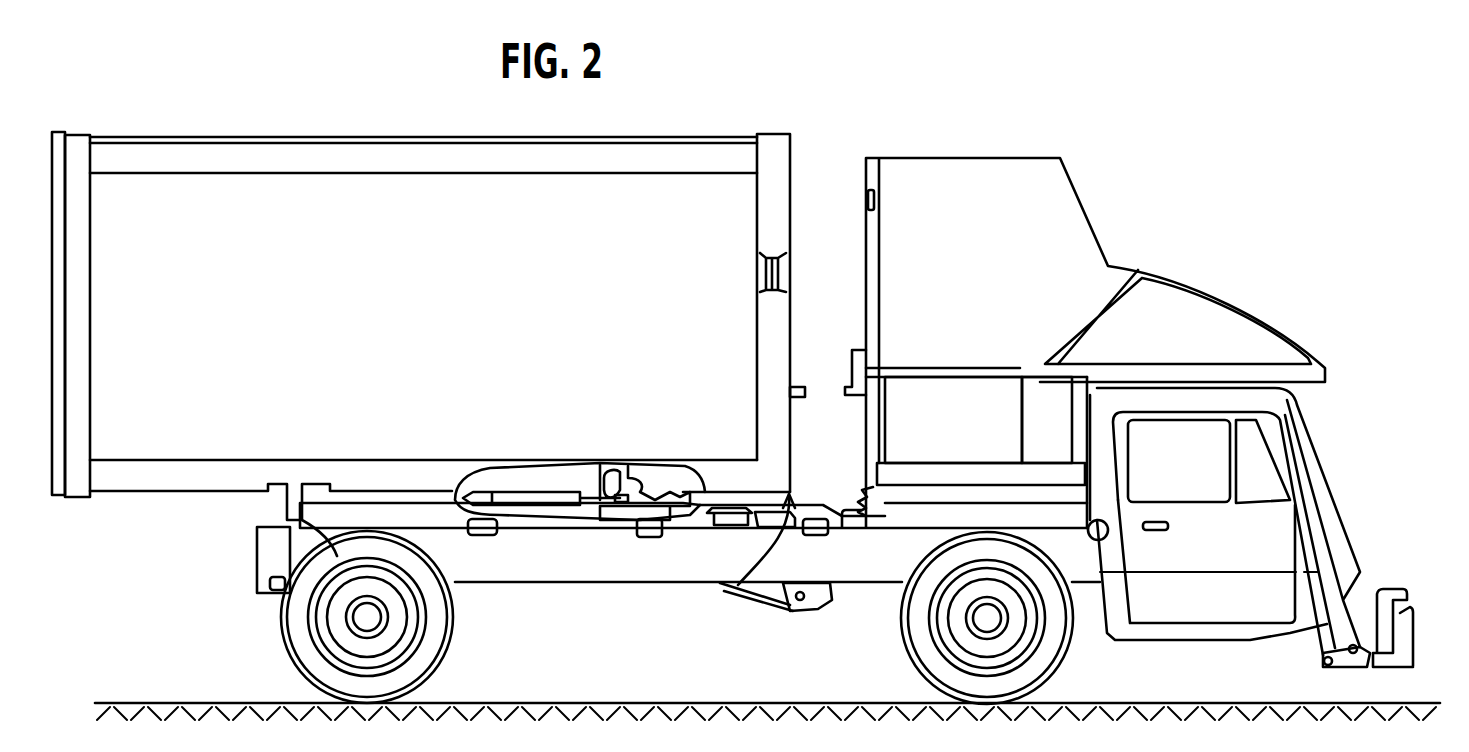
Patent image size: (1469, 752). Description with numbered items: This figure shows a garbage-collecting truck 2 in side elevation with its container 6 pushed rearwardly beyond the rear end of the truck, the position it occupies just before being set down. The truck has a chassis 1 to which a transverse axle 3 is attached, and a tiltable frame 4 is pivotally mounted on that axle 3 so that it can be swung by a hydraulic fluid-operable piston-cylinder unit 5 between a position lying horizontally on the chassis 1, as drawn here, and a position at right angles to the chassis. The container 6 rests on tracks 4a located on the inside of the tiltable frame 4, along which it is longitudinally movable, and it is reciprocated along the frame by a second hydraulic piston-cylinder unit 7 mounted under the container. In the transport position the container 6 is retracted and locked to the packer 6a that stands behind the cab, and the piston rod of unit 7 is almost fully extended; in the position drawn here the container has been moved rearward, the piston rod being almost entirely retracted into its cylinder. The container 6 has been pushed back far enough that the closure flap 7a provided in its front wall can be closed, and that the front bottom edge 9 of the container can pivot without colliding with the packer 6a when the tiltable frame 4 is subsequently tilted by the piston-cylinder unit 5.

The chassis 1 is at (505, 571).
The garbage-collecting truck 2 is at (1129, 412).
The transverse axle 3 is at (303, 584).
The tiltable frame 4 is at (769, 515).
The tracks 4a is at (723, 518).
The hydraulic fluid-operable piston-cylinder unit 5 is at (777, 594).
The container 6 is at (498, 293).
The packer 6a is at (1068, 212).
The hydraulic piston-cylinder unit 7 is at (563, 500).
The closure flap 7a is at (776, 272).
The front bottom edge 9 is at (740, 584).